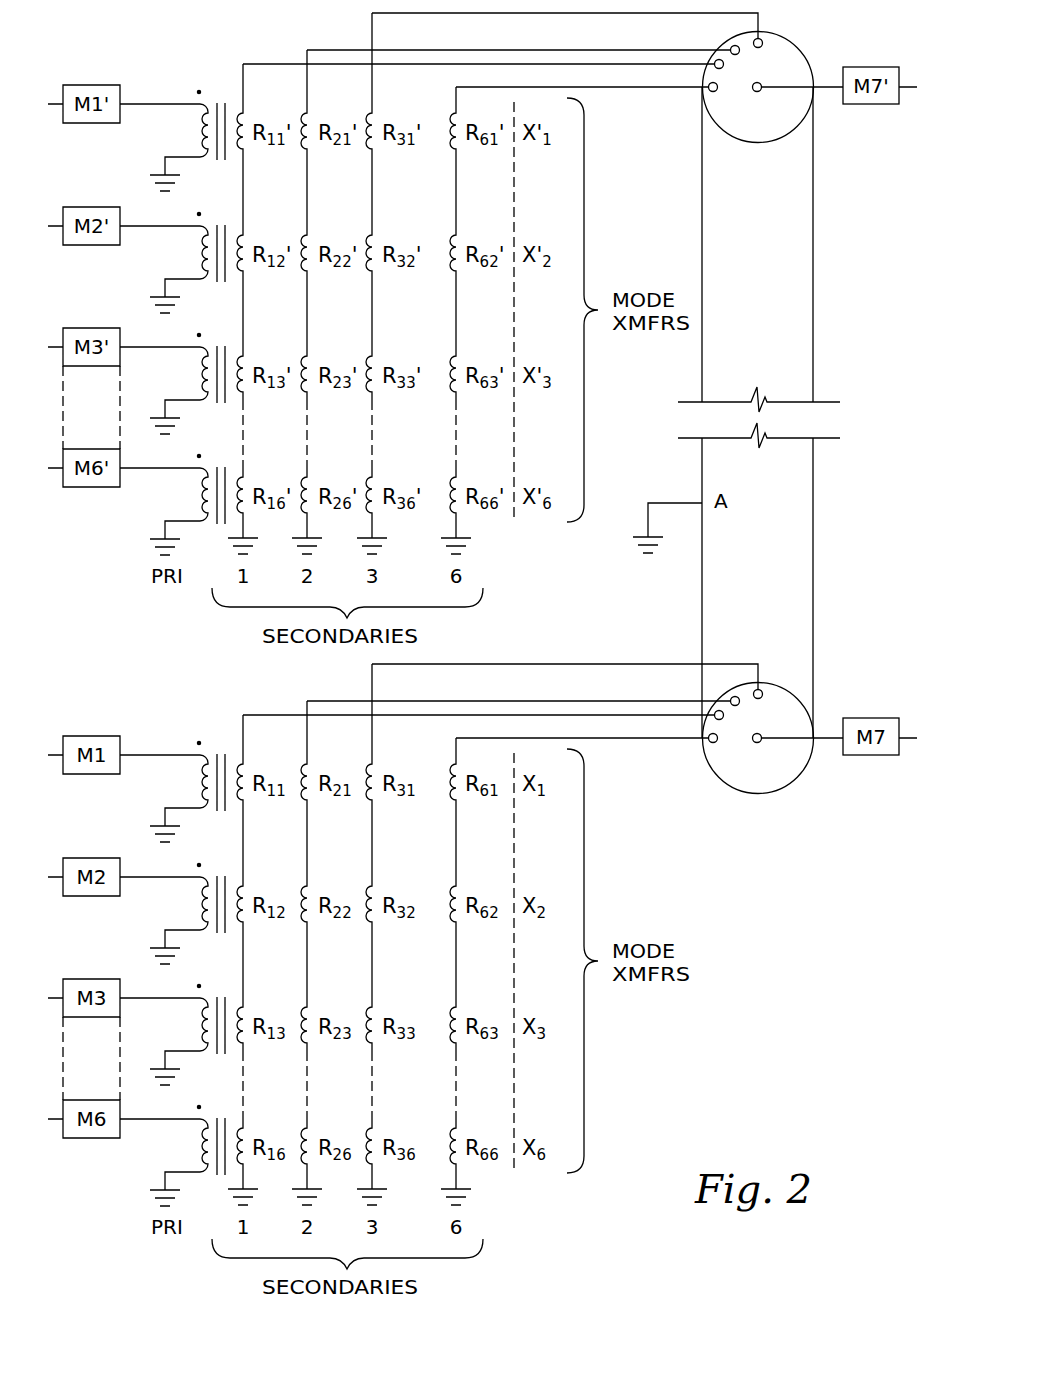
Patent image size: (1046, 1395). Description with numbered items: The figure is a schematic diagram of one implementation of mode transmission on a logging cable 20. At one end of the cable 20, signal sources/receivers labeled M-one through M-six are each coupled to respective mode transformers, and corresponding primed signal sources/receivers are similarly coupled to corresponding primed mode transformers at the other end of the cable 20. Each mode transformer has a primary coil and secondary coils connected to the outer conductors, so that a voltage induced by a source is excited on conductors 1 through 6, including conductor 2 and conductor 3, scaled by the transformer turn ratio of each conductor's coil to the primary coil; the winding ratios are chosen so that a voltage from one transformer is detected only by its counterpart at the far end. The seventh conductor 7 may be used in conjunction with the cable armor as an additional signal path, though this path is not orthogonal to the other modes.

The conductor 1 is at (726, 396).
The conductor 2 is at (740, 384).
The conductor 3 is at (757, 378).
The conductor 6 is at (721, 411).
The seventh conductor 7 is at (757, 423).
The cable 20 is at (808, 553).